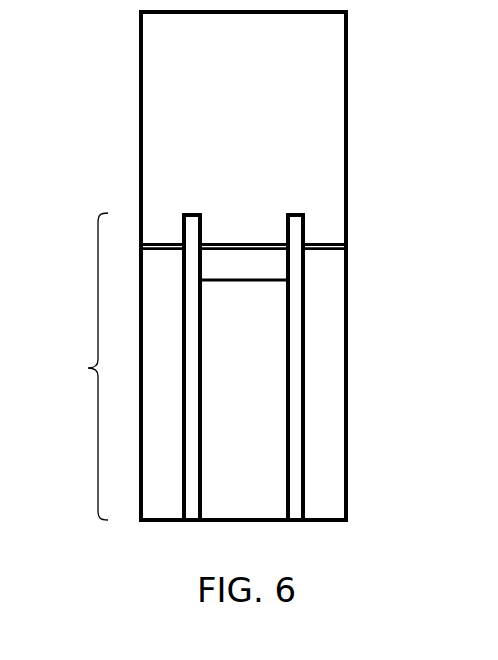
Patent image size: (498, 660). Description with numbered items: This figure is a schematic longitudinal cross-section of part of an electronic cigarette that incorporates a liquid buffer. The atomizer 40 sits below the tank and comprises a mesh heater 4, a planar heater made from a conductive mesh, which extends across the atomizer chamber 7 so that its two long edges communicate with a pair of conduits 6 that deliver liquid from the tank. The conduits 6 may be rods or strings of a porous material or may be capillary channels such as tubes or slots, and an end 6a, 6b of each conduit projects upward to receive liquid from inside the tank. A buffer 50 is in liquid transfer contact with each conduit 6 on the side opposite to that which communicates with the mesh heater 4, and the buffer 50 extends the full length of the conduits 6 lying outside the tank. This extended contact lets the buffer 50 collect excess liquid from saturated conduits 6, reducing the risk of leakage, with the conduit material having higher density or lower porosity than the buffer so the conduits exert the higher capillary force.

The mesh heater 4 is at (253, 326).
The conduit 6 is at (240, 375).
The end of conduit 6a is at (305, 236).
The end of conduit 6b is at (182, 231).
The atomizer chamber 7 is at (252, 278).
The atomizer 40 is at (87, 368).
The buffer 50 is at (327, 440).